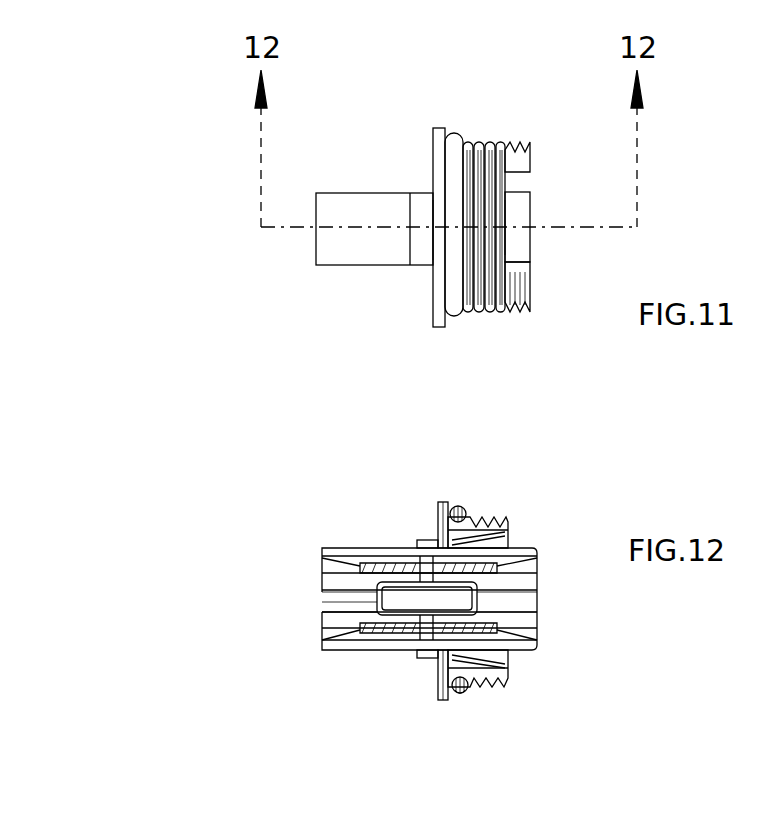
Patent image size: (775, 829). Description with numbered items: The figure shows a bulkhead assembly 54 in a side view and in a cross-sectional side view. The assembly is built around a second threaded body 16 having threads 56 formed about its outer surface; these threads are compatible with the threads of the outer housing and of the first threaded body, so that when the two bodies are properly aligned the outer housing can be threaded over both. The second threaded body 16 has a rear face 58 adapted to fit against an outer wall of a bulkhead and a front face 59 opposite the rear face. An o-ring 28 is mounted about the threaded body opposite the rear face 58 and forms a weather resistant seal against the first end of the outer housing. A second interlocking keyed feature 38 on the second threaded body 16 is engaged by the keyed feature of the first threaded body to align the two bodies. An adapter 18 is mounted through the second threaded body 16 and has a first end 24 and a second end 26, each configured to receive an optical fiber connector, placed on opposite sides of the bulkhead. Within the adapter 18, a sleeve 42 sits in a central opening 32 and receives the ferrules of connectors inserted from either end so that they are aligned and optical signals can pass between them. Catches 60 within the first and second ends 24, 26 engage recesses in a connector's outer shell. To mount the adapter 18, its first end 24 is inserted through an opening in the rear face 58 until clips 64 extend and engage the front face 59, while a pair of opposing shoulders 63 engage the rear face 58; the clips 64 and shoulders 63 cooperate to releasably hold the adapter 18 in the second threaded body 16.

In FIG. 11, the second threaded body 16 is at (433, 143).
In FIG. 12, the second threaded body 16 is at (435, 503).
In FIG. 11, the adapter 18 is at (527, 240).
In FIG. 12, the adapter 18 is at (322, 550).
In FIG. 11, the first end 24 is at (530, 207).
In FIG. 12, the first end 24 is at (523, 617).
In FIG. 11, the second end 26 is at (316, 213).
In FIG. 12, the second end 26 is at (317, 617).
In FIG. 11, the o-ring 28 is at (457, 317).
In FIG. 12, the o-ring 28 is at (460, 697).
In FIG. 12, the central opening 32 is at (373, 603).
In FIG. 11, the second interlocking keyed feature 38 is at (527, 170).
In FIG. 12, the sleeve 42 is at (498, 595).
In FIG. 12, the bulkhead assembly 54 is at (246, 484).
In FIG. 11, the threads 56 is at (518, 308).
In FIG. 12, the threads 56 is at (500, 513).
In FIG. 11, the rear face 58 is at (433, 297).
In FIG. 12, the rear face 58 is at (447, 543).
In FIG. 12, the front face 59 is at (458, 514).
In FIG. 12, the catches 60 is at (357, 573).
In FIG. 12, the shoulders 63 is at (423, 540).
In FIG. 12, the clips 64 is at (500, 535).